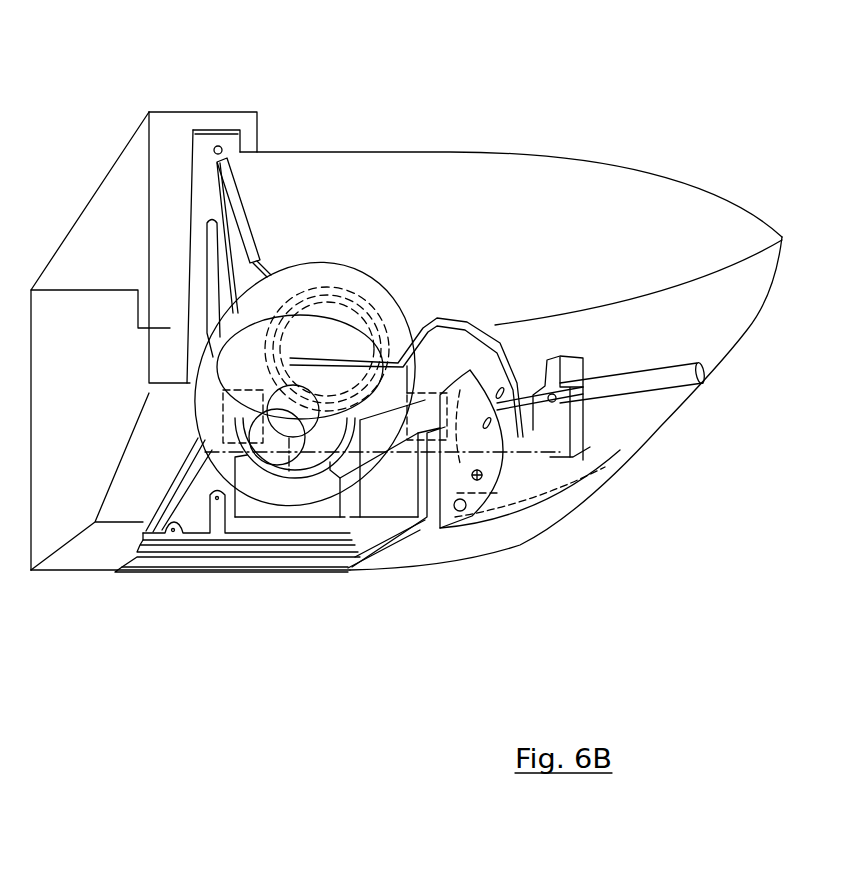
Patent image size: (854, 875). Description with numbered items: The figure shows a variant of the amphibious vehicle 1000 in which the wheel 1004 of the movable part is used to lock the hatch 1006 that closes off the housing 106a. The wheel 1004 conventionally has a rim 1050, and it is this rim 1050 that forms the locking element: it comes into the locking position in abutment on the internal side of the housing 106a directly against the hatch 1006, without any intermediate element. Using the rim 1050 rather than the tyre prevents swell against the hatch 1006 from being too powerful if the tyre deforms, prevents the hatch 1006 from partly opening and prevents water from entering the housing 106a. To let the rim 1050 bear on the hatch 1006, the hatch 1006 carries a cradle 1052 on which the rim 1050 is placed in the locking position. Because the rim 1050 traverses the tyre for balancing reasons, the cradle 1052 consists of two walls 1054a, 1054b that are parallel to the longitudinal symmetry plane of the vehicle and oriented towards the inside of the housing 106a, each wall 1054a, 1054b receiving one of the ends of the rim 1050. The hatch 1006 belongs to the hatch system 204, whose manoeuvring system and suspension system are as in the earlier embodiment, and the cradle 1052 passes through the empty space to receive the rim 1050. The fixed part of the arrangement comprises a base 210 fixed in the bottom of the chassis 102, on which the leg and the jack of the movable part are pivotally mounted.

The amphibious vehicle 1000 is at (632, 100).
The chassis 102 is at (732, 238).
The housing 106a is at (664, 243).
The wheel 1004 is at (353, 282).
The rim 1050 is at (288, 445).
The wall 1054a is at (280, 502).
The wall 1054b is at (362, 422).
The hatch 1006 is at (200, 507).
The hatch system 204 is at (143, 665).
The cradle 1052 is at (337, 680).
The base 210 is at (545, 453).